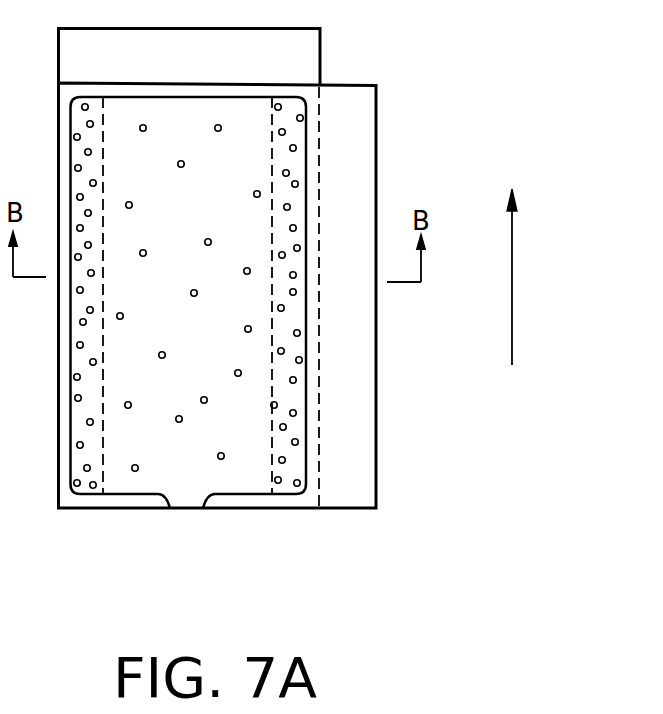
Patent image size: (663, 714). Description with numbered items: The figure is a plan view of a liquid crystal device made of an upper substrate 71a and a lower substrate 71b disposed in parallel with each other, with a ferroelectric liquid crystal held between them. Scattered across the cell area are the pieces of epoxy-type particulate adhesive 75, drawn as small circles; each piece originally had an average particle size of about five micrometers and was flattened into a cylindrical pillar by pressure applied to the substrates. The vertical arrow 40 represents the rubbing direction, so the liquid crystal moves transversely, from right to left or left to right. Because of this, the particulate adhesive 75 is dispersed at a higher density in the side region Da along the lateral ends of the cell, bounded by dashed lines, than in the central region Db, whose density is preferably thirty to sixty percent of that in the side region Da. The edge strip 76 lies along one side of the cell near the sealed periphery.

The upper substrate 71a is at (362, 111).
The lower substrate 71b is at (307, 57).
The particulate adhesive 75 is at (300, 331).
The edge strip 76 is at (307, 500).
The vertical arrow 40 is at (513, 268).
The cell side region Da is at (87, 489).
The central region Db is at (148, 480).